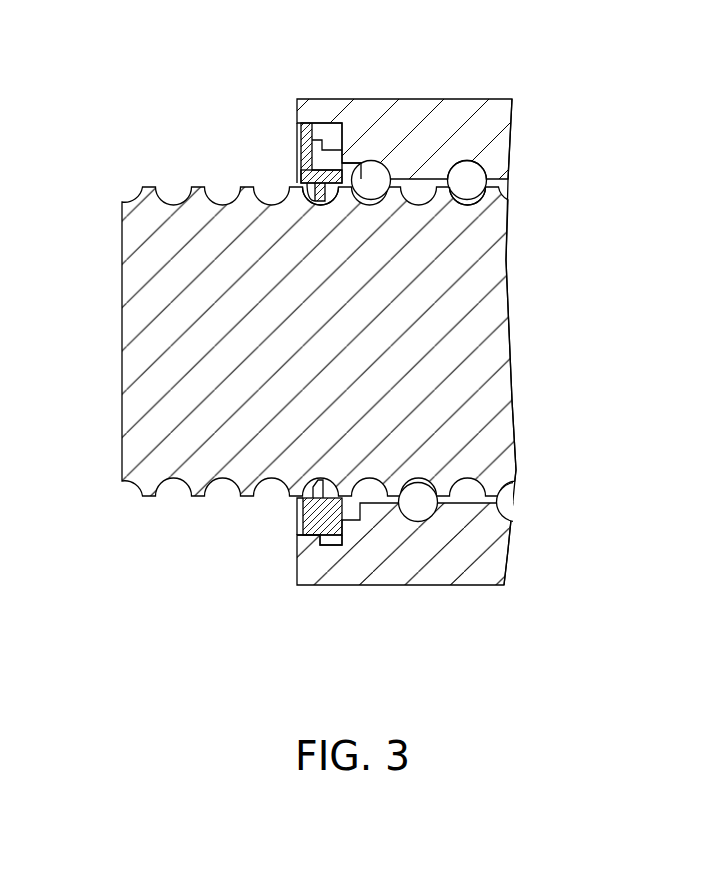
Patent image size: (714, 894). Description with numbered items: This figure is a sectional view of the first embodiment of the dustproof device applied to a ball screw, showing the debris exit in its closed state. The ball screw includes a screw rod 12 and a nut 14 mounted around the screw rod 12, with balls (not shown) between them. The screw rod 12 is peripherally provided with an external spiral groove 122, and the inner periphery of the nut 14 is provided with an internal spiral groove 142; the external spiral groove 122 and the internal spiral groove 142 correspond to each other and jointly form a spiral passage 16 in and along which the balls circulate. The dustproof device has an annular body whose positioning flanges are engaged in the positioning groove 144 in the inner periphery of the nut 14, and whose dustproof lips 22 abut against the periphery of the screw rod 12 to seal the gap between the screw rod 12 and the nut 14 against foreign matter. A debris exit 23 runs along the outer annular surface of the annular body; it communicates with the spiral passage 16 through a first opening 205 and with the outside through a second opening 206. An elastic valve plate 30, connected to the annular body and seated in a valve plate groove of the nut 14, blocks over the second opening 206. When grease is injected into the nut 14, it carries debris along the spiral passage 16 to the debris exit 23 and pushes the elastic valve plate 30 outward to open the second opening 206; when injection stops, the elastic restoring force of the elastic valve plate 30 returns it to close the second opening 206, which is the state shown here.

The screw rod 12 is at (163, 340).
The nut 14 is at (445, 123).
The spiral passage 16 is at (600, 110).
The dustproof lip 22 is at (310, 202).
The debris exit 23 is at (333, 157).
The elastic valve plate 30 is at (300, 137).
The external spiral groove 122 is at (469, 205).
The internal spiral groove 142 is at (467, 161).
The positioning groove 144 is at (323, 547).
The first opening 205 is at (347, 161).
The second opening 206 is at (315, 146).